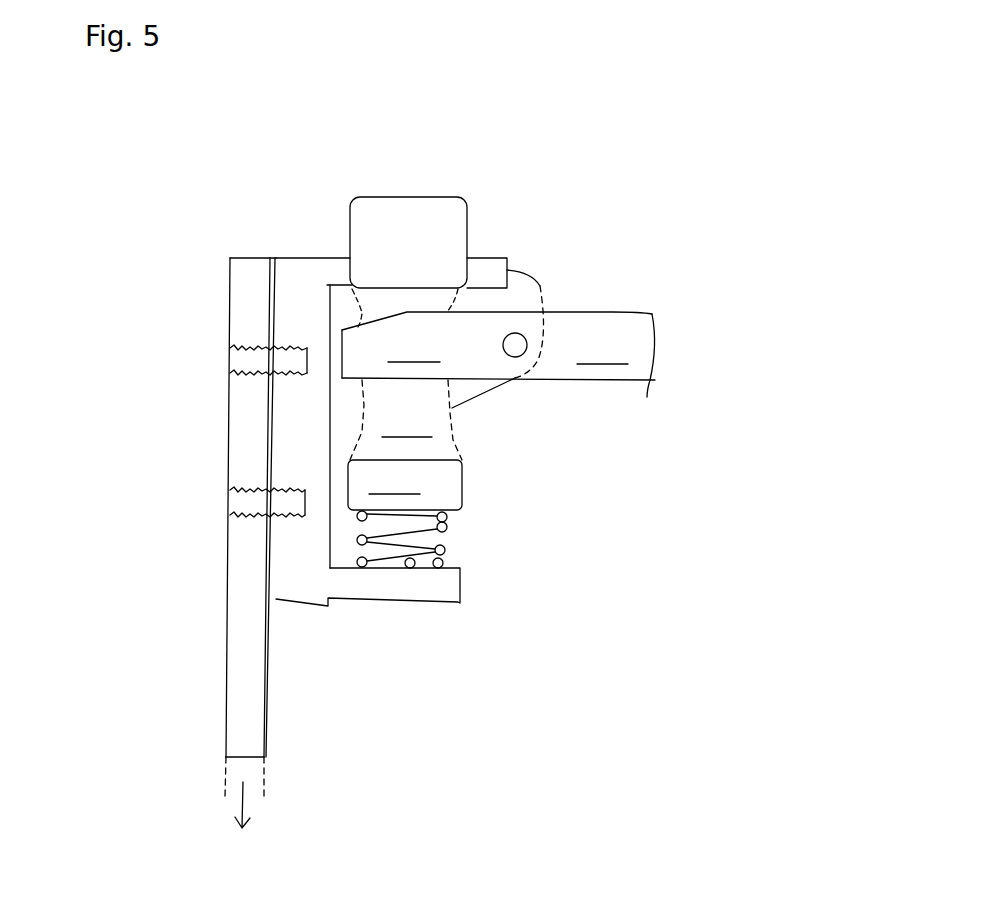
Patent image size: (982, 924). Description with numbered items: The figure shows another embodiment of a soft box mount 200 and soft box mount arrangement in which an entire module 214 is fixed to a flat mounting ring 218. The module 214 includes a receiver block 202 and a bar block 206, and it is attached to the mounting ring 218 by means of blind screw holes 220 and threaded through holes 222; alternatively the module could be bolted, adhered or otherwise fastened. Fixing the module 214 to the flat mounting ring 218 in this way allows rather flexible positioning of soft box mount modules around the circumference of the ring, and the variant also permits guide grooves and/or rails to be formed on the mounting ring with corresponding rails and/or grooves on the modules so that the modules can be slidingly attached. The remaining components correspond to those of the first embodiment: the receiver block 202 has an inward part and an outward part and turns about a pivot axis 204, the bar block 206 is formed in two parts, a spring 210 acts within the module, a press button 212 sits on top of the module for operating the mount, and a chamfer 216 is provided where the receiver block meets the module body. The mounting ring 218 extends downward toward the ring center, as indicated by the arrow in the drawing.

The soft box mount 200 is at (581, 217).
The receiver block 202 is at (603, 312).
The pivot axis 204 is at (525, 337).
The bar block 206 is at (462, 483).
The spring 210 is at (445, 552).
The press button 212 is at (428, 245).
The module 214 is at (310, 260).
The chamfer 216 is at (358, 325).
The flat mounting ring 218 is at (233, 272).
The blind screw holes 220 is at (304, 352).
The threaded through holes 222 is at (230, 360).